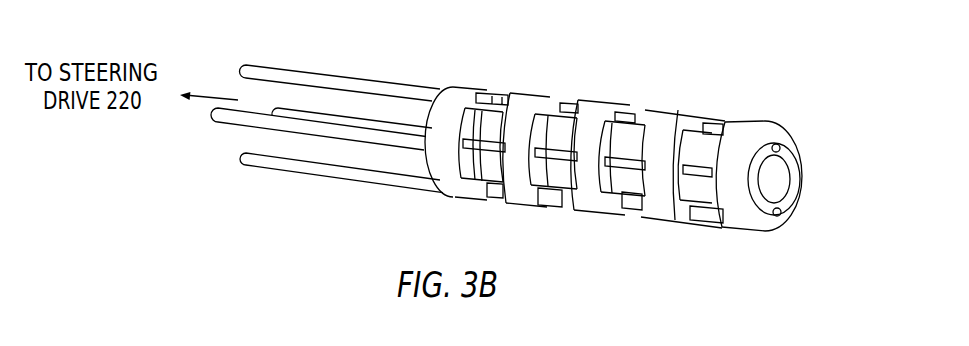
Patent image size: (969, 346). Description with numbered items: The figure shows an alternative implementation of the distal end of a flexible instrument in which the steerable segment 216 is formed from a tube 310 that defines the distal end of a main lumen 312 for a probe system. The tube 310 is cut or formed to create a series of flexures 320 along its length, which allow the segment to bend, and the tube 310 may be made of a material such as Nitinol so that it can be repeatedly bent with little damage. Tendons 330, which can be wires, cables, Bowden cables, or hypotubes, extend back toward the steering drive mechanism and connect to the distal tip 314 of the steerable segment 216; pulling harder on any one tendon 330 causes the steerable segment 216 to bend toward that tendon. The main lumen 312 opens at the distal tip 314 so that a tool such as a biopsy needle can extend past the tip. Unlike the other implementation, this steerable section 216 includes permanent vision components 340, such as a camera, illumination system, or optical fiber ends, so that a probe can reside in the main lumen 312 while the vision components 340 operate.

The steerable segment 216 is at (755, 80).
The tube 310 is at (452, 177).
The main lumen 312 is at (778, 177).
The distal tip 314 is at (757, 230).
The flexures 320 is at (505, 95).
The tendons 330 is at (322, 112).
The vision components 340 is at (785, 147).